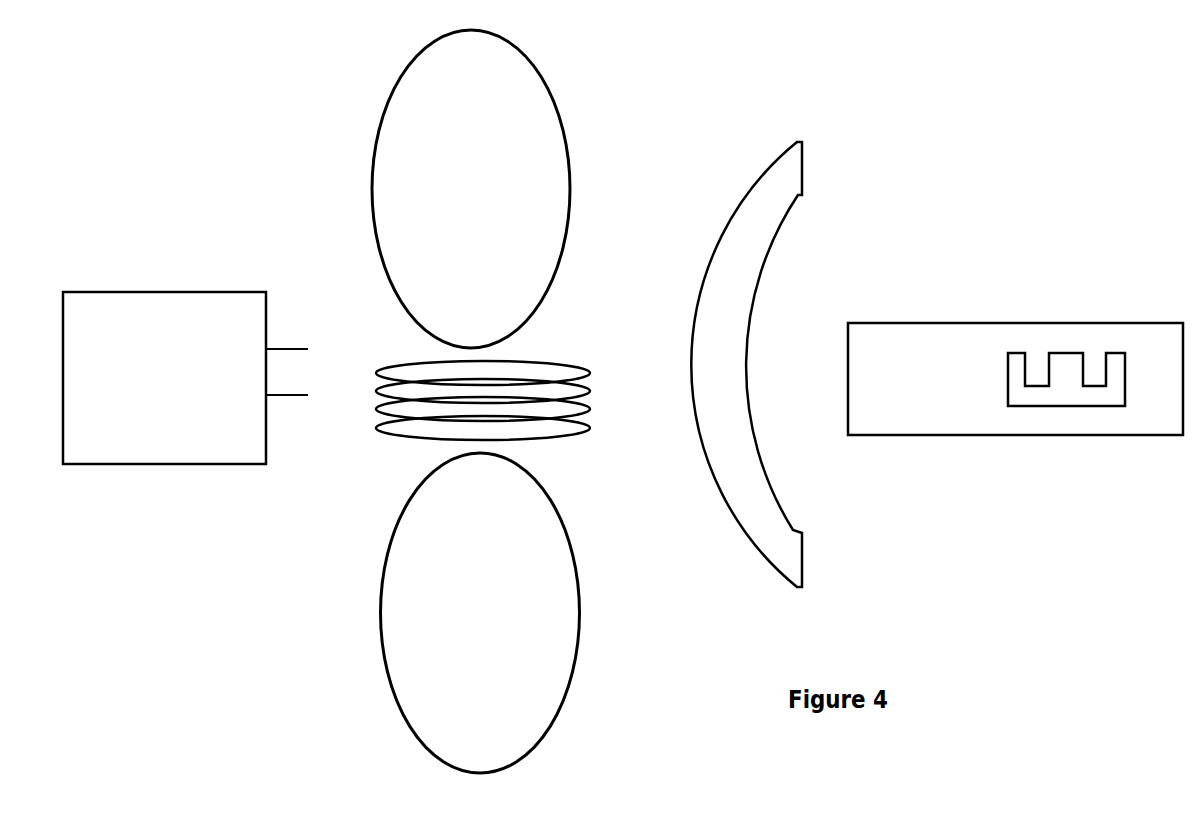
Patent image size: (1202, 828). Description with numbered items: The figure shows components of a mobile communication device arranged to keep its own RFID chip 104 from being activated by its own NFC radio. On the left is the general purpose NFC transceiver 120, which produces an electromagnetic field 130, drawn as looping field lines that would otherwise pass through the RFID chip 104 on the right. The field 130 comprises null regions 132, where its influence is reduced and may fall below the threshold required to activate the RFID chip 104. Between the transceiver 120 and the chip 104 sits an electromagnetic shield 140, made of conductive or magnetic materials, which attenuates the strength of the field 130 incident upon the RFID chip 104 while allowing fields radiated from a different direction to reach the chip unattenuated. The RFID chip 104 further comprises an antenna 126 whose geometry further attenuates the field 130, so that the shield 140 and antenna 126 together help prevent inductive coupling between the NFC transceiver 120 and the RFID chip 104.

The general purpose NFC transceiver 120 is at (239, 290).
The electromagnetic field 130 is at (570, 152).
The null region 132 is at (645, 393).
The electromagnetic shield 140 is at (802, 140).
The RFID chip 104 is at (1032, 323).
The antenna 126 is at (1088, 407).